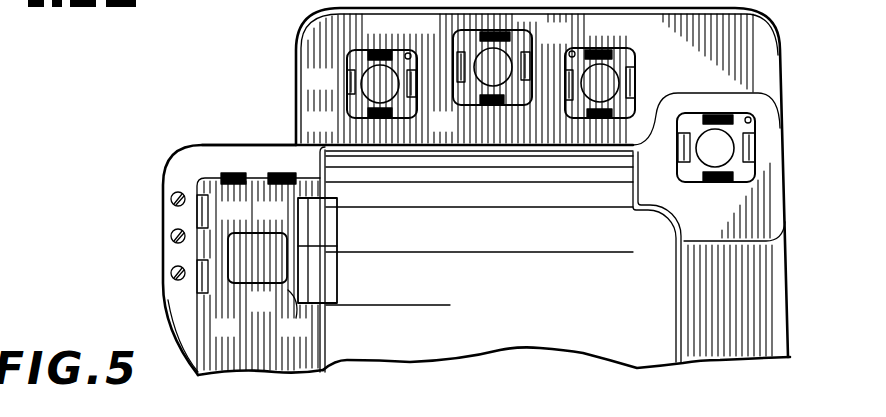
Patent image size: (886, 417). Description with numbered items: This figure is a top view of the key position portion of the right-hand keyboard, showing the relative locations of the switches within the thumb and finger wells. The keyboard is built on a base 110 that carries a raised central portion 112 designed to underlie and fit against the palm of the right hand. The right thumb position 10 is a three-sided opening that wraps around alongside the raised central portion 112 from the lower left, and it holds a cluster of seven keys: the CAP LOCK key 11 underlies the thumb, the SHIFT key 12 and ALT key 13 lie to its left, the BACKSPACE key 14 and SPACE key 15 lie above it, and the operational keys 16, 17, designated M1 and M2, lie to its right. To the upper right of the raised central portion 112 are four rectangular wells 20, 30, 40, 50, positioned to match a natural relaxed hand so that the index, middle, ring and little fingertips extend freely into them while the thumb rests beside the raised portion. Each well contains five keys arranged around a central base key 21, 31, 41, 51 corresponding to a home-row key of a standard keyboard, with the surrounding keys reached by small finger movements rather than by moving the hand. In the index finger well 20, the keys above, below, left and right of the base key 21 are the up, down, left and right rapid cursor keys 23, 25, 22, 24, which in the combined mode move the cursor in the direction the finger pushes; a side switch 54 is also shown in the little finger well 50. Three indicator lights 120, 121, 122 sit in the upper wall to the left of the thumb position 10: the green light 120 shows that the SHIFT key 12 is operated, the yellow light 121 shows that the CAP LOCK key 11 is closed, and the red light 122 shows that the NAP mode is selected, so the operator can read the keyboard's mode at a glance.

The right thumb position 10 is at (200, 320).
The CAP LOCK key 11 is at (257, 274).
The SHIFT key 12 is at (208, 282).
The ALT key 13 is at (236, 198).
The BACKSPACE key 14 is at (226, 172).
The SPACE key 15 is at (280, 172).
The operational key 16 is at (301, 206).
The operational key 17 is at (295, 316).
The index finger well 20 is at (410, 53).
The base key 21 is at (380, 86).
The left cursor key 22 is at (351, 82).
The up cursor key 23 is at (394, 25).
The right cursor key 24 is at (413, 80).
The down cursor key 25 is at (380, 120).
The middle finger well 30 is at (491, 65).
The base key 31 is at (500, 62).
The ring finger well 40 is at (568, 53).
The base key 41 is at (608, 80).
The little finger well 50 is at (752, 122).
The base key 51 is at (710, 156).
The side contact 54 is at (752, 152).
The base 110 is at (762, 40).
The raised central portion 112 is at (493, 323).
The green indicator light 120 is at (170, 199).
The yellow indicator light 121 is at (170, 236).
The red indicator light 122 is at (170, 273).